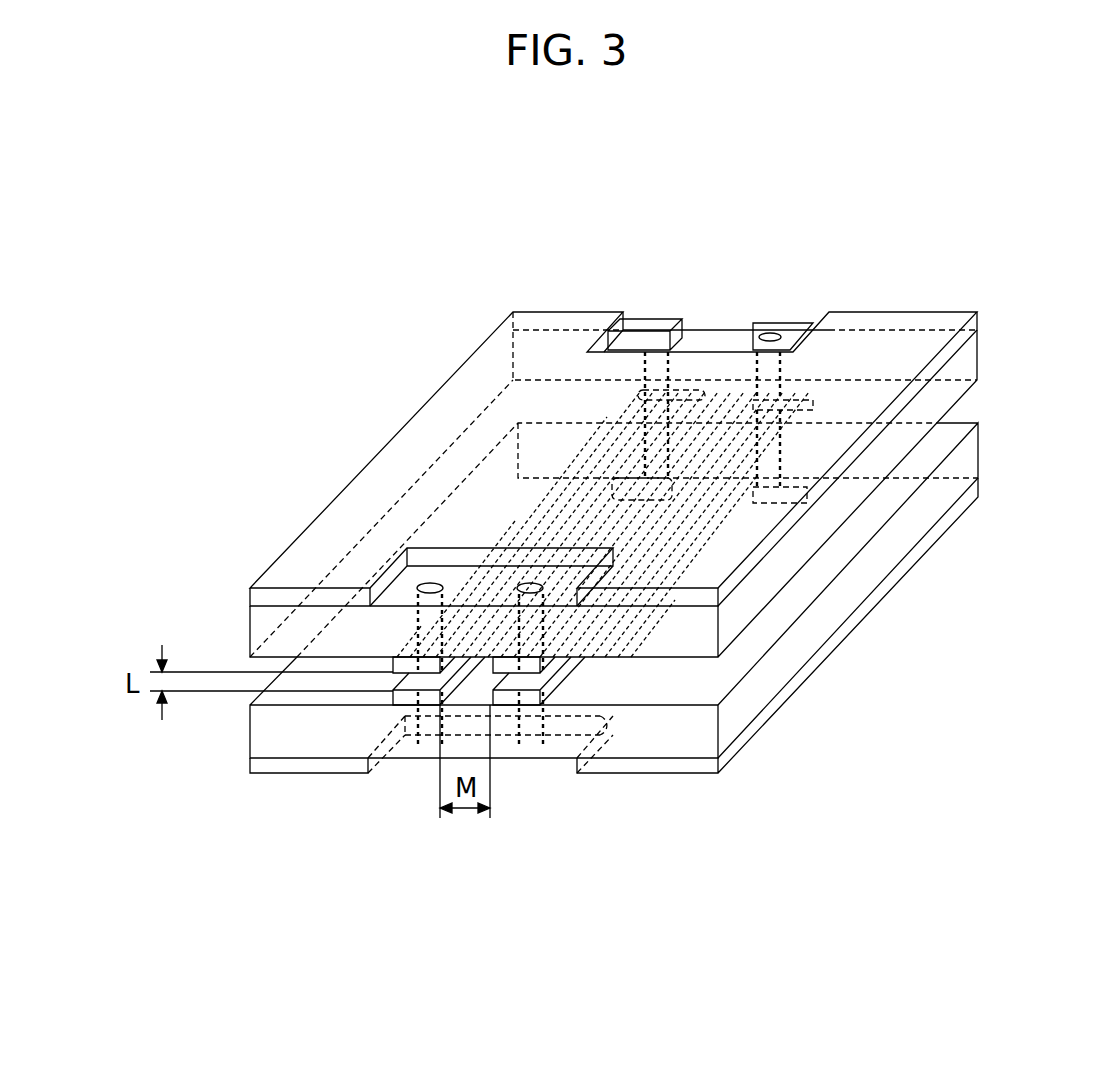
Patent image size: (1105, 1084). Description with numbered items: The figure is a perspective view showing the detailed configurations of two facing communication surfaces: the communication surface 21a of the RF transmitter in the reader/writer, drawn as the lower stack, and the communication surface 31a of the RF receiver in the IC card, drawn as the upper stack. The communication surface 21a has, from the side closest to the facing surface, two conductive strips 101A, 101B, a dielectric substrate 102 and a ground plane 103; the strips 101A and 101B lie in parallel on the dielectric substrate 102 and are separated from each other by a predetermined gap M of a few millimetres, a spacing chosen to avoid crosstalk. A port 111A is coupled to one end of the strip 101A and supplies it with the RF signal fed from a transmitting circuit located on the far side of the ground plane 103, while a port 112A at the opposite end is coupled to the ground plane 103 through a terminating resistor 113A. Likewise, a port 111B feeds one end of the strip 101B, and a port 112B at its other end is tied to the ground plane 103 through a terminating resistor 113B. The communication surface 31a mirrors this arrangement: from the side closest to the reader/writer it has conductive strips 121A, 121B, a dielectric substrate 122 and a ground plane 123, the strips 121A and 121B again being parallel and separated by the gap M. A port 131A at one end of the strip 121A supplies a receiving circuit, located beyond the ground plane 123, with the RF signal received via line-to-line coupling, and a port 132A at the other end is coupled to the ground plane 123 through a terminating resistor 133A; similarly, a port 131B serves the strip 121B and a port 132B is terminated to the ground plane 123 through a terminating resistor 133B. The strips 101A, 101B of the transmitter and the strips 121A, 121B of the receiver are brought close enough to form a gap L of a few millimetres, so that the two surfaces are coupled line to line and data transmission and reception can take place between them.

The communication surface 31a is at (178, 515).
The communication surface 21a is at (162, 809).
The ground plane 123 is at (980, 324).
The dielectric substrate 122 is at (980, 361).
The dielectric substrate 102 is at (645, 757).
The ground plane 103 is at (696, 772).
The conductive strip 121A is at (392, 667).
The conductive strip 121B is at (560, 656).
The conductive strip 101A is at (402, 698).
The conductive strip 101B is at (548, 698).
The port 131A is at (427, 583).
The port 131B is at (527, 583).
The port 111A is at (430, 747).
The port 111B is at (527, 747).
The terminating resistor 133A is at (632, 323).
The terminating resistor 133B is at (787, 330).
The port 132A is at (672, 370).
The port 132B is at (787, 367).
The port 112A is at (643, 460).
The port 112B is at (783, 463).
The terminating resistor 113A is at (610, 493).
The terminating resistor 113B is at (790, 500).